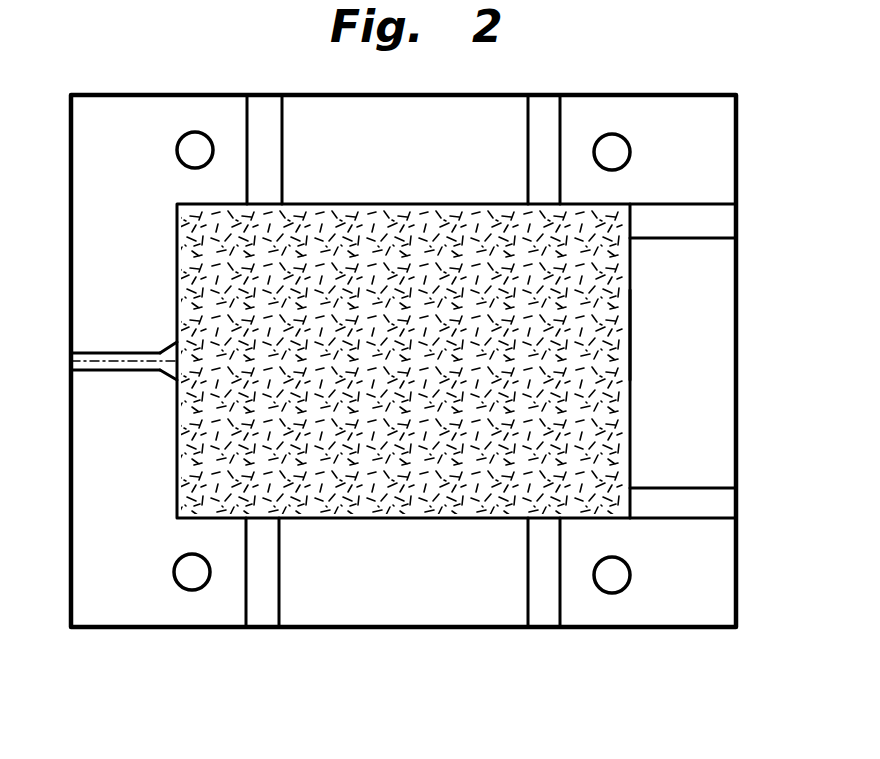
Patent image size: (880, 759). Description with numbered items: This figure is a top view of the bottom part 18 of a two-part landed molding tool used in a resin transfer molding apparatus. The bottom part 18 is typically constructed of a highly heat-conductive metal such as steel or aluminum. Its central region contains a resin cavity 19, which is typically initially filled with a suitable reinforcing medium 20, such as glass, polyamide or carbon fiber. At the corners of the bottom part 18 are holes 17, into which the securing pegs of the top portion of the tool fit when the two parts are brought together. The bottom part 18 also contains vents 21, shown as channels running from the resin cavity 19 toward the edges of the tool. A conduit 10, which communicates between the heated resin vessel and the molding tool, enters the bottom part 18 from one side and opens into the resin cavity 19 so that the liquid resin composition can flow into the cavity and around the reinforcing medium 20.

The conduit 10 is at (97, 353).
The holes 17 is at (181, 150).
The bottom part 18 is at (88, 200).
The resin cavity 19 is at (405, 218).
The reinforcing medium 20 is at (603, 300).
The vents 21 is at (540, 113).